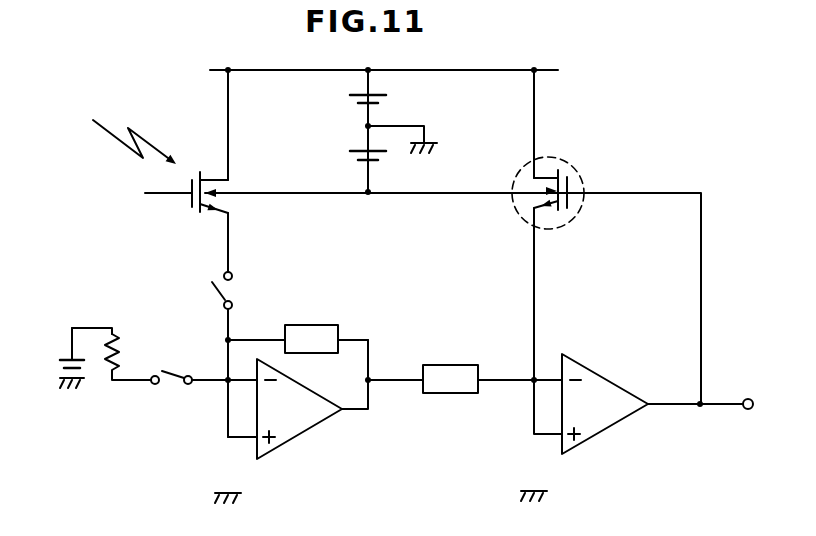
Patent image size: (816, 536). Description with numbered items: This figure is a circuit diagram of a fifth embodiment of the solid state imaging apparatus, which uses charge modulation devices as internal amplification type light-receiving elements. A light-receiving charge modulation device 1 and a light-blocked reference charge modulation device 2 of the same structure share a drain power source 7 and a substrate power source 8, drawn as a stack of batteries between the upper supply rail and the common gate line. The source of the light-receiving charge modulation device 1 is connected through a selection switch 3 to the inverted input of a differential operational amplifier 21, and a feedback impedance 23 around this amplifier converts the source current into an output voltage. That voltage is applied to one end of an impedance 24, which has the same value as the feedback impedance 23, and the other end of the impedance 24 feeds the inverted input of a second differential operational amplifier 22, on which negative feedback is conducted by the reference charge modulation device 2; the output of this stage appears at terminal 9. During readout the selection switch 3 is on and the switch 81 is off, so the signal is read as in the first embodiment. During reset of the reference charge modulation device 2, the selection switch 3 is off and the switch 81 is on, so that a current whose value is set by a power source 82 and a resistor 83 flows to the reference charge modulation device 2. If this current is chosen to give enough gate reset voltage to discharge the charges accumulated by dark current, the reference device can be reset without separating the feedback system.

The light-receiving charge modulation device 1 is at (193, 210).
The reference charge modulation device 2 is at (567, 227).
The selection switch 3 is at (233, 293).
The drain power source 7 is at (382, 99).
The substrate power source 8 is at (350, 152).
The output terminal 9 is at (748, 411).
The differential operational amplifier 21 is at (319, 425).
The differential operational amplifier 22 is at (617, 424).
The feedback impedance 23 is at (328, 324).
The impedance 24 is at (450, 364).
The switch 81 is at (170, 388).
The power source 82 is at (61, 369).
The resistor 83 is at (124, 349).